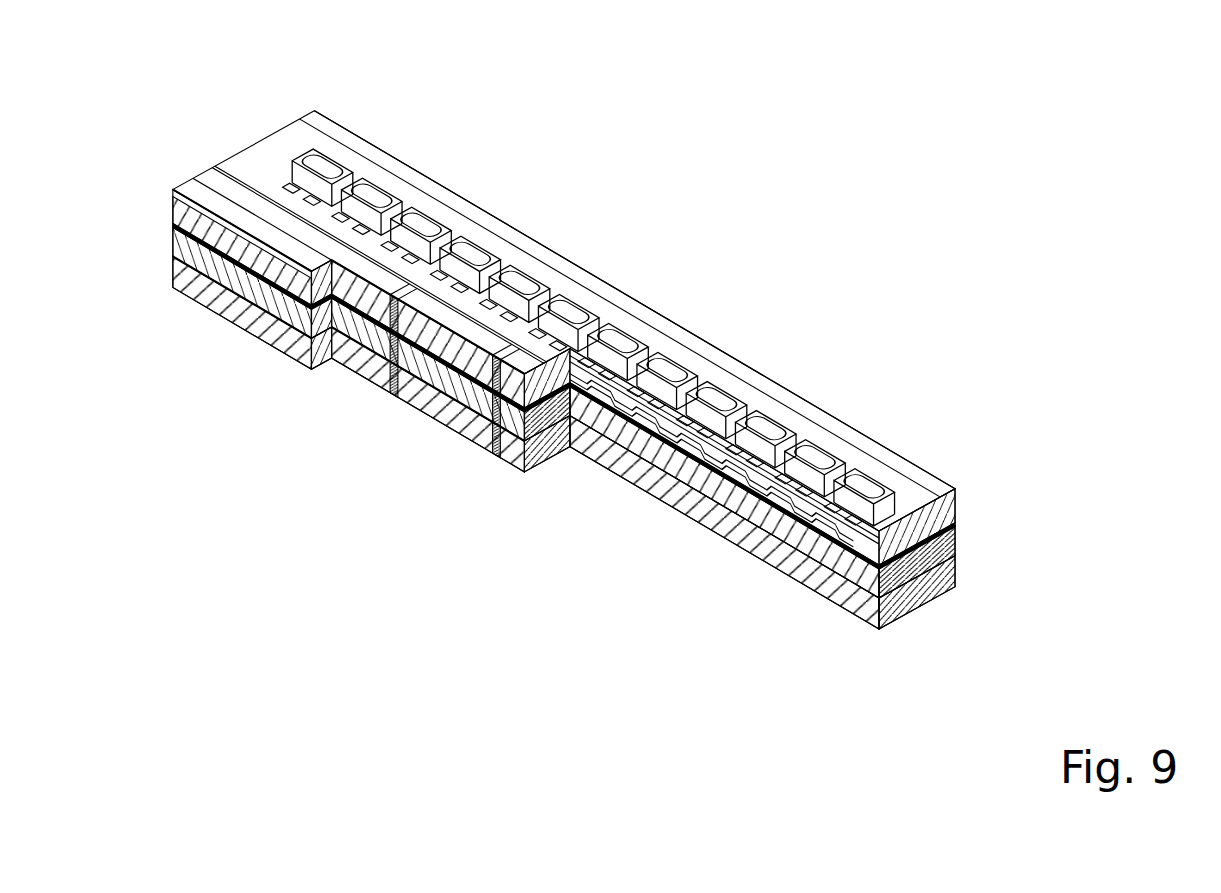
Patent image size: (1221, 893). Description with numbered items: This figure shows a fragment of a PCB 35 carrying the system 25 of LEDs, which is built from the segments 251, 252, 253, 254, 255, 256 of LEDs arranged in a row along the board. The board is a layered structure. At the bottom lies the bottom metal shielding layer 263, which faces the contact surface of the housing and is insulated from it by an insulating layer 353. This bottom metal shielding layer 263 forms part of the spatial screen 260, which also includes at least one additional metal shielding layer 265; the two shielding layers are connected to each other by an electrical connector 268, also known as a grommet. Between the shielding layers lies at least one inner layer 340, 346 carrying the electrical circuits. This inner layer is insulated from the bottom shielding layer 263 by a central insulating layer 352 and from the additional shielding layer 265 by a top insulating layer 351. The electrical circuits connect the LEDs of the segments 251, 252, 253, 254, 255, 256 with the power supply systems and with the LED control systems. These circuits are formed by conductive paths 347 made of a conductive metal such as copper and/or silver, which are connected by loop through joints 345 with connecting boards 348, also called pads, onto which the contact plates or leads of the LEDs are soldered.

The system of LEDs 25 is at (248, 142).
The PCB 35 is at (665, 315).
The segment of LEDs 251 is at (373, 195).
The segment of LEDs 252 is at (470, 255).
The segment of LEDs 253 is at (569, 313).
The segment of LEDs 254 is at (866, 488).
The segment of LEDs 255 is at (650, 405).
The segment of LEDs 256 is at (767, 430).
The spatial screen 260 is at (818, 440).
The bottom metal shielding layer 263 is at (548, 455).
The additional metal shielding layer 265 is at (432, 398).
The electrical connector 268 is at (496, 425).
The inner layer with electrical circuits 340 is at (945, 531).
The loop through joints 345 is at (862, 592).
The inner layer with electrical circuits 346 is at (243, 280).
The conductive paths 347 is at (790, 540).
The connecting boards 348 is at (385, 370).
The top insulating layer 351 is at (940, 512).
The central insulating layer 352 is at (935, 560).
The insulating layer 353 is at (925, 598).